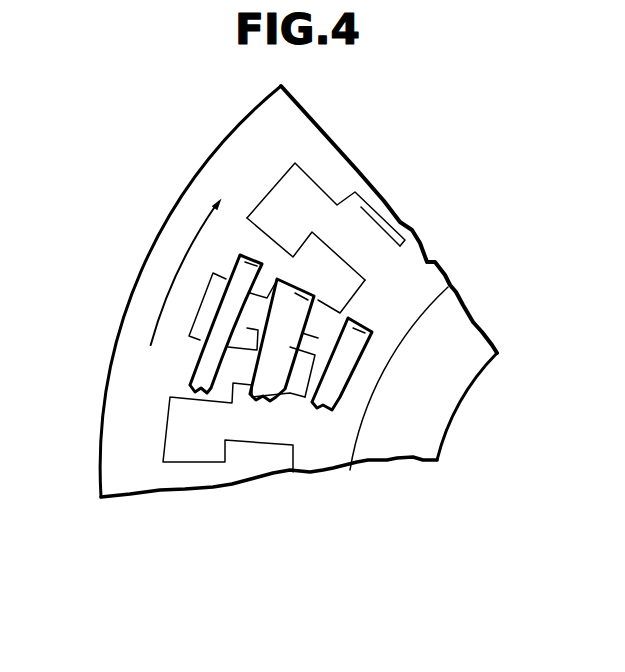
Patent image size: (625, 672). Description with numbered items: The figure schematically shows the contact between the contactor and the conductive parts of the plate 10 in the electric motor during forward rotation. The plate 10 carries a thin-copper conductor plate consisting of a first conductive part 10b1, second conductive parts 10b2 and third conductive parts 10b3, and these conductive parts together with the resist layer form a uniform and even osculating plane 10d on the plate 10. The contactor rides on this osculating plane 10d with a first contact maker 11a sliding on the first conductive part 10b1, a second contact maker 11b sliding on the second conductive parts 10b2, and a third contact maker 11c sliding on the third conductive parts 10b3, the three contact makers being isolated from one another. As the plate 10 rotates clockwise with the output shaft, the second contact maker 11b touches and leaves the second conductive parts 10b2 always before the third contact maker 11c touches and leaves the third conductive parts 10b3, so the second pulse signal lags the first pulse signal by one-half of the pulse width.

The plate 10 is at (222, 140).
The first conductive part 10b1 is at (410, 270).
The second conductive parts 10b2 is at (313, 320).
The third conductive parts 10b3 is at (272, 262).
The osculating plane 10d is at (312, 265).
The first contact maker 11a is at (333, 392).
The second contact maker 11b is at (256, 370).
The third contact maker 11c is at (202, 354).